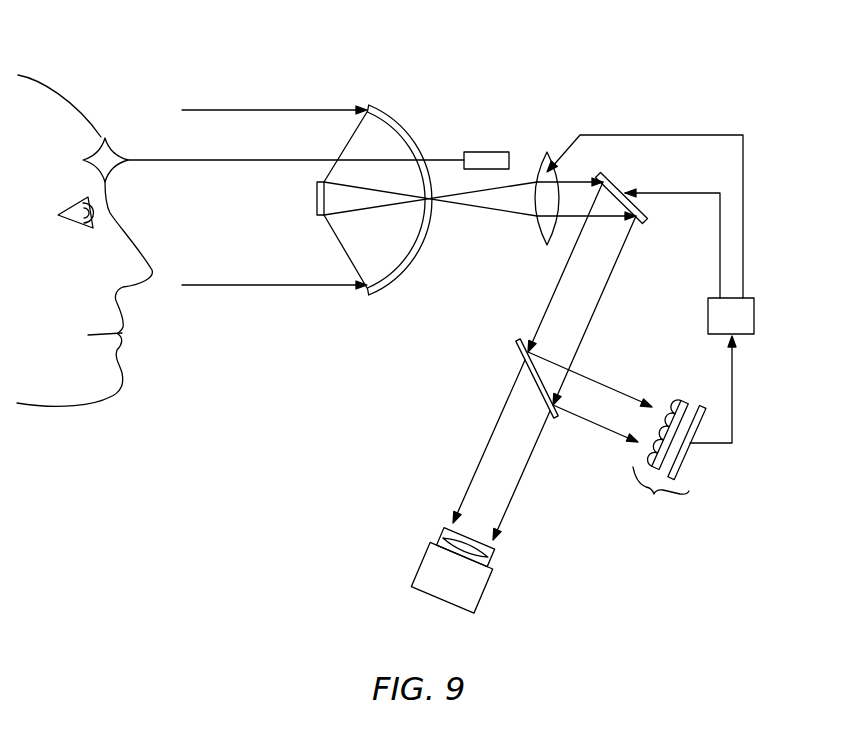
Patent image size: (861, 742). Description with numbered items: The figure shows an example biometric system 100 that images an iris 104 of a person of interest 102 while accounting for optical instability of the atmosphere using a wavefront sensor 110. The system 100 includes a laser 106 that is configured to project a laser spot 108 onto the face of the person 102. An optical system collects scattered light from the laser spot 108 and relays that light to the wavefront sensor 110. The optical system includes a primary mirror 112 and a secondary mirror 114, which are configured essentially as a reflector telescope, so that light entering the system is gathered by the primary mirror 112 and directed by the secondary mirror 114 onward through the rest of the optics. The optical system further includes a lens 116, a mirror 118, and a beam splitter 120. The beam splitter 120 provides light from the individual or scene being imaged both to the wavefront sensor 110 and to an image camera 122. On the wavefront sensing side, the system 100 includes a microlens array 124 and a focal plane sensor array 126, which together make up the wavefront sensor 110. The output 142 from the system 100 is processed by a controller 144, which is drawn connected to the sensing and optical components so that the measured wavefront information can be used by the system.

The biometric system 100 is at (709, 41).
The person of interest 102 is at (76, 79).
The iris 104 is at (92, 208).
The laser 106 is at (487, 152).
The laser spot 108 is at (113, 153).
The wavefront sensor 110 is at (674, 458).
The primary mirror 112 is at (405, 128).
The secondary mirror 114 is at (317, 197).
The lens 116 is at (540, 228).
The mirror 118 is at (615, 182).
The beam splitter 120 is at (518, 352).
The image camera 122 is at (408, 535).
The microlens array 124 is at (663, 428).
The focal plane sensor array 126 is at (688, 465).
The output 142 is at (733, 388).
The controller 144 is at (757, 313).